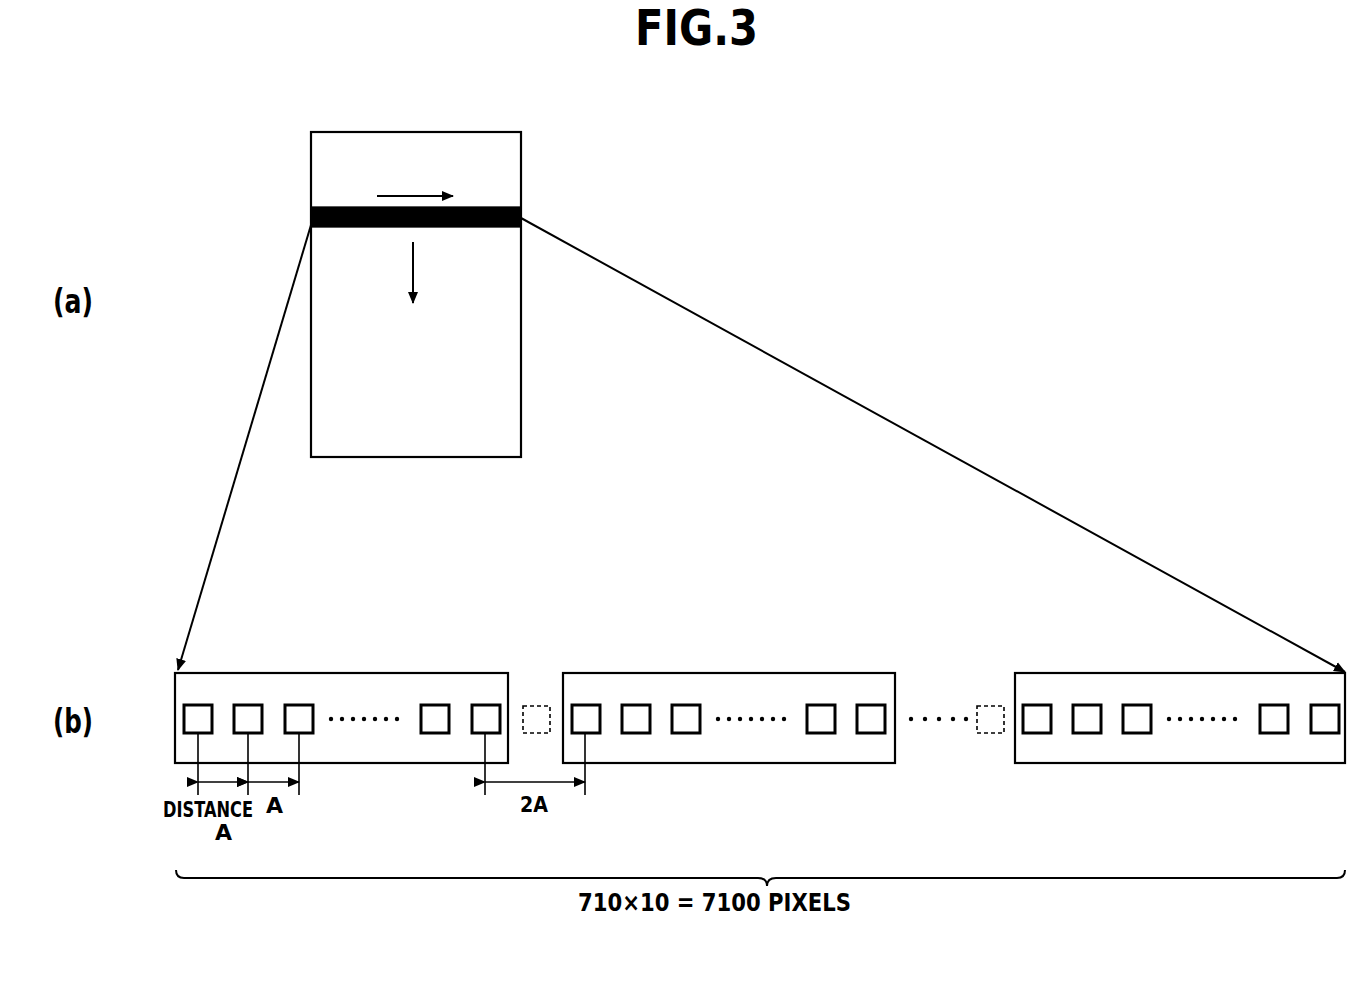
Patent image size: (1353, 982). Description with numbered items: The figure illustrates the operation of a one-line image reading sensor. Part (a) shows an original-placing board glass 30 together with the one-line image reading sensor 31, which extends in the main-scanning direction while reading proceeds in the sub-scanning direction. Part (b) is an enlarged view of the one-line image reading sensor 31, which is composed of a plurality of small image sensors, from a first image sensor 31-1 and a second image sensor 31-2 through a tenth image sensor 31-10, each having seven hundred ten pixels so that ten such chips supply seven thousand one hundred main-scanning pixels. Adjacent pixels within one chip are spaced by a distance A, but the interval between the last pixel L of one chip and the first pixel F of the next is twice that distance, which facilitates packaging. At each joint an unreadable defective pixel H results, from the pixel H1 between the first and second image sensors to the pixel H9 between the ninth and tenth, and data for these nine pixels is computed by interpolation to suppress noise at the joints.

The original-placing board glass 30 is at (521, 398).
The one-line image reading sensor 31 is at (521, 204).
The first image sensor 31-1 is at (445, 673).
The second image sensor 31-2 is at (817, 673).
The tenth image sensor 31-10 is at (1218, 673).
The pixel H1 is at (541, 705).
The pixel H9 is at (991, 705).